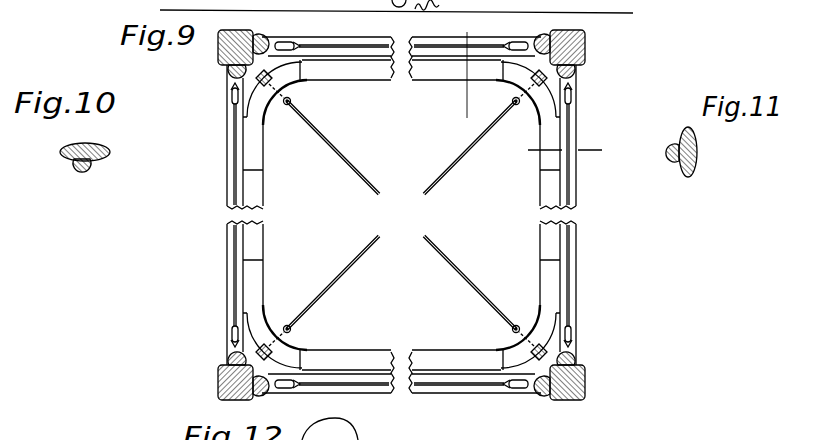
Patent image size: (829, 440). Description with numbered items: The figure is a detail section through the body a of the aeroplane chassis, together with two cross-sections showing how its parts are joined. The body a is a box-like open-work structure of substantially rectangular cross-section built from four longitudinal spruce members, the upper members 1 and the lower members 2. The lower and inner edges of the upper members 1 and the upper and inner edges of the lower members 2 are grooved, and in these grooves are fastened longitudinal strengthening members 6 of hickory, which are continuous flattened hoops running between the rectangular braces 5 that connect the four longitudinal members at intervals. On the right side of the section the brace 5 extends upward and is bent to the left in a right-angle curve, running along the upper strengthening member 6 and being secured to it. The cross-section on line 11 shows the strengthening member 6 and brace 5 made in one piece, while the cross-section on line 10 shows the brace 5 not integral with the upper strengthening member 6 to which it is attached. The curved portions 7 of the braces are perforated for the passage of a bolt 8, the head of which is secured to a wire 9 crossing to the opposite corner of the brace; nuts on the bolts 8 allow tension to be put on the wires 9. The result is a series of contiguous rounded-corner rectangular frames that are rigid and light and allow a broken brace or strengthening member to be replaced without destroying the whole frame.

In FIG. 9, the upper longitudinal member 1 is at (242, 29).
In FIG. 9, the lower longitudinal member 2 is at (408, 392).
In FIG. 9, the rectangular brace 5 is at (545, 182).
In FIG. 10, the rectangular brace 5 is at (95, 173).
In FIG. 11, the rectangular brace 5 is at (665, 162).
In FIG. 9, the longitudinal strengthening member 6 is at (231, 70).
In FIG. 10, the longitudinal strengthening member 6 is at (107, 146).
In FIG. 11, the longitudinal strengthening member 6 is at (695, 152).
In FIG. 9, the curved portion 7 is at (283, 77).
In FIG. 9, the bolt 8 is at (526, 104).
In FIG. 9, the wire 9 is at (440, 173).
In FIG. 9, the section line 10— 10 is at (472, 122).
In FIG. 9, the section line 11— 11 is at (566, 152).
In FIG. 9, the body a is at (403, 208).